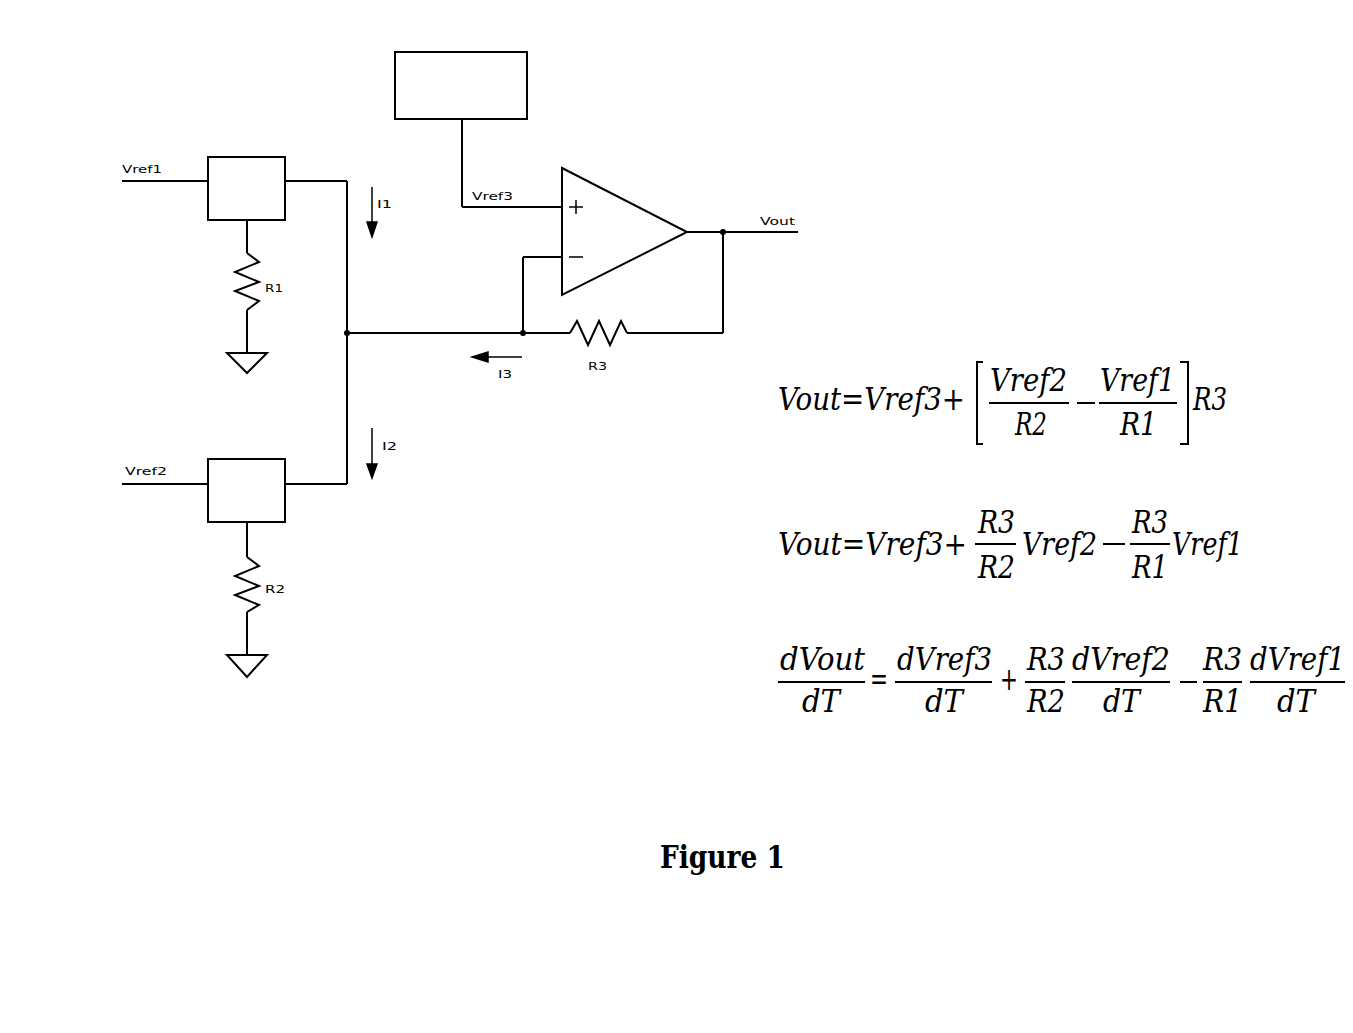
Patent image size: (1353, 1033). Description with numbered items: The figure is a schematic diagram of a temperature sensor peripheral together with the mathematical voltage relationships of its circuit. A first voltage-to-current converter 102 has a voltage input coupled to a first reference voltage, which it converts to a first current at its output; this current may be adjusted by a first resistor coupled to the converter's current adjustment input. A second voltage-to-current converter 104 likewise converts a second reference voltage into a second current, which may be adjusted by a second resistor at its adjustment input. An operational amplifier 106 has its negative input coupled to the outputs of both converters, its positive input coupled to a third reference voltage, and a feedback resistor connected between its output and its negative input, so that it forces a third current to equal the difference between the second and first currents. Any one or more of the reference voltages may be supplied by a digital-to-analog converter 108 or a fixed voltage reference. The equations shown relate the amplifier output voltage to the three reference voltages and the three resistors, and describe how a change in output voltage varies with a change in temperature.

The first voltage-to-current converter 102 is at (284, 158).
The second voltage-to-current converter 104 is at (284, 513).
The operational amplifier 106 is at (625, 199).
The digital-to-analog converter (DAC) 108 is at (527, 67).